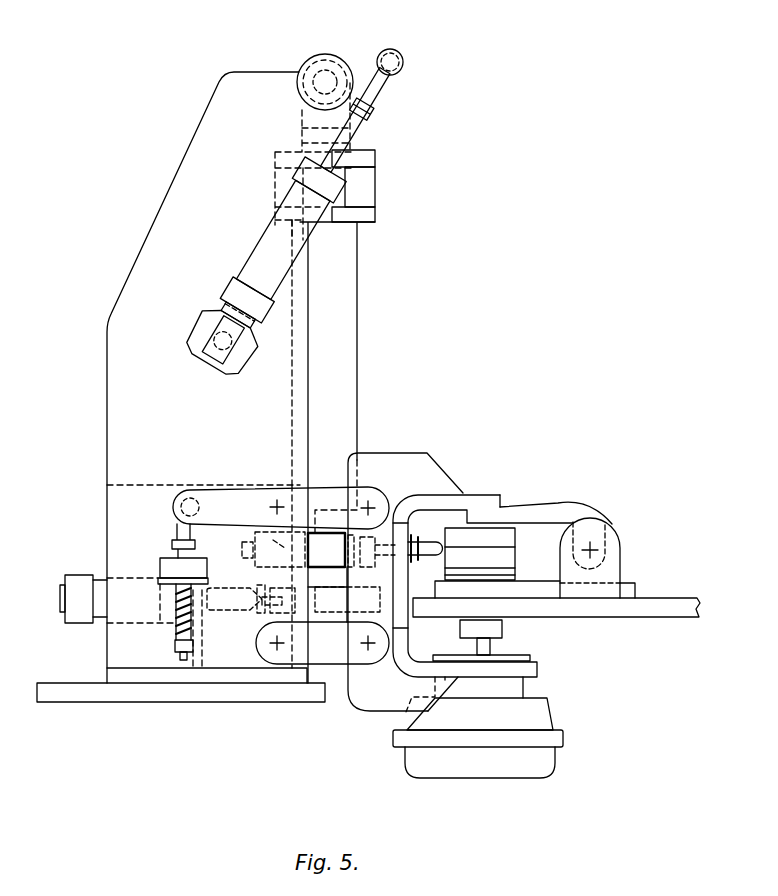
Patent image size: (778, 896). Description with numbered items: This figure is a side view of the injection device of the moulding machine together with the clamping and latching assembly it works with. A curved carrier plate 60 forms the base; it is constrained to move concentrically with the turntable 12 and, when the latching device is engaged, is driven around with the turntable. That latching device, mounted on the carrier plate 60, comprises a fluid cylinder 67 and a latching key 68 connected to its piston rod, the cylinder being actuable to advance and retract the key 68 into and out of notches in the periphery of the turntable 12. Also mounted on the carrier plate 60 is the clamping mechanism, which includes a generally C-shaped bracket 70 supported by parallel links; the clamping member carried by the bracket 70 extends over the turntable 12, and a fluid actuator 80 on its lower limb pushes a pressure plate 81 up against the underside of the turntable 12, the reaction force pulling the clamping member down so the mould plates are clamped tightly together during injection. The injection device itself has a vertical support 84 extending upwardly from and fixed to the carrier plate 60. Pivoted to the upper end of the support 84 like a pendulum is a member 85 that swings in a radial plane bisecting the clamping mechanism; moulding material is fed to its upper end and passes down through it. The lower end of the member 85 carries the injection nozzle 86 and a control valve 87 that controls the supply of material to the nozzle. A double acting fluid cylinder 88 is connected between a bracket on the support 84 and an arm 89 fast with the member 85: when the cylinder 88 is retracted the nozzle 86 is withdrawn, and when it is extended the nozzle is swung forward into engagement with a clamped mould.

The turntable 12 is at (666, 607).
The carrier plate 60 is at (58, 691).
The fluid cylinder 67 is at (84, 588).
The latching key 68 is at (331, 598).
The C-shaped bracket 70 is at (385, 462).
The fluid actuator 80 is at (543, 763).
The pressure plate 81 is at (492, 632).
The vertical support 84 is at (118, 390).
The member 85 is at (345, 353).
The injection nozzle 86 is at (428, 540).
The control valve 87 is at (242, 540).
The double acting fluid cylinder 88 is at (266, 262).
The arm 89 is at (360, 61).